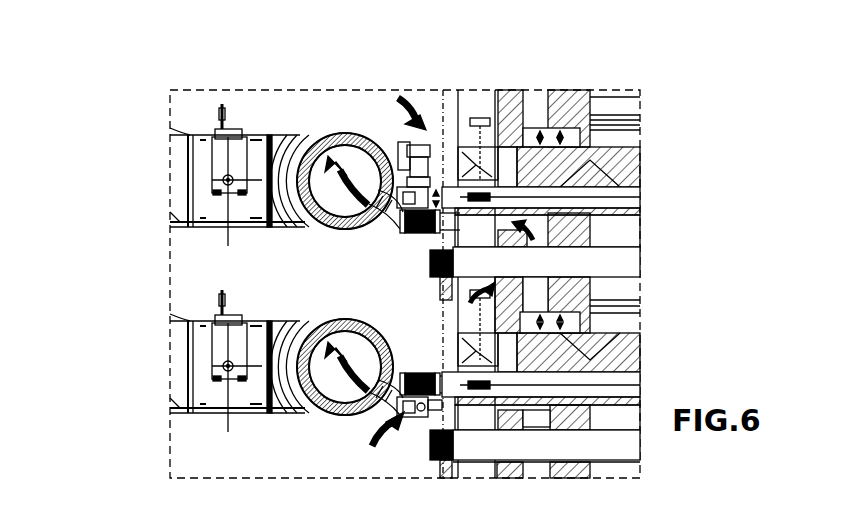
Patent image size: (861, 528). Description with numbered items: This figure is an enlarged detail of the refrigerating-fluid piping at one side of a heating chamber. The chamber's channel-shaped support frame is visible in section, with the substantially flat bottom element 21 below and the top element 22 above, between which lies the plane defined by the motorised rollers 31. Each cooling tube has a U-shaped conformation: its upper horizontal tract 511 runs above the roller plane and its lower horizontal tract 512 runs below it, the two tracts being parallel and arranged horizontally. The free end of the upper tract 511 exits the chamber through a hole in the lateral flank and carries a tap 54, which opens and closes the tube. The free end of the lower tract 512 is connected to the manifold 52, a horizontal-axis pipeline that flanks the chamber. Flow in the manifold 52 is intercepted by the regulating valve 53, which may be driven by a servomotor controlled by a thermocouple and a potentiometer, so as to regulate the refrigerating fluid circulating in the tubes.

The bottom element 21 is at (607, 350).
The top element 22 is at (620, 178).
The motorised rollers 31 is at (607, 263).
The upper horizontal tract 511 is at (620, 200).
The lower horizontal tract 512 is at (620, 322).
The manifold 52 is at (337, 231).
The regulating valve 53 is at (200, 237).
The tap 54 is at (407, 147).